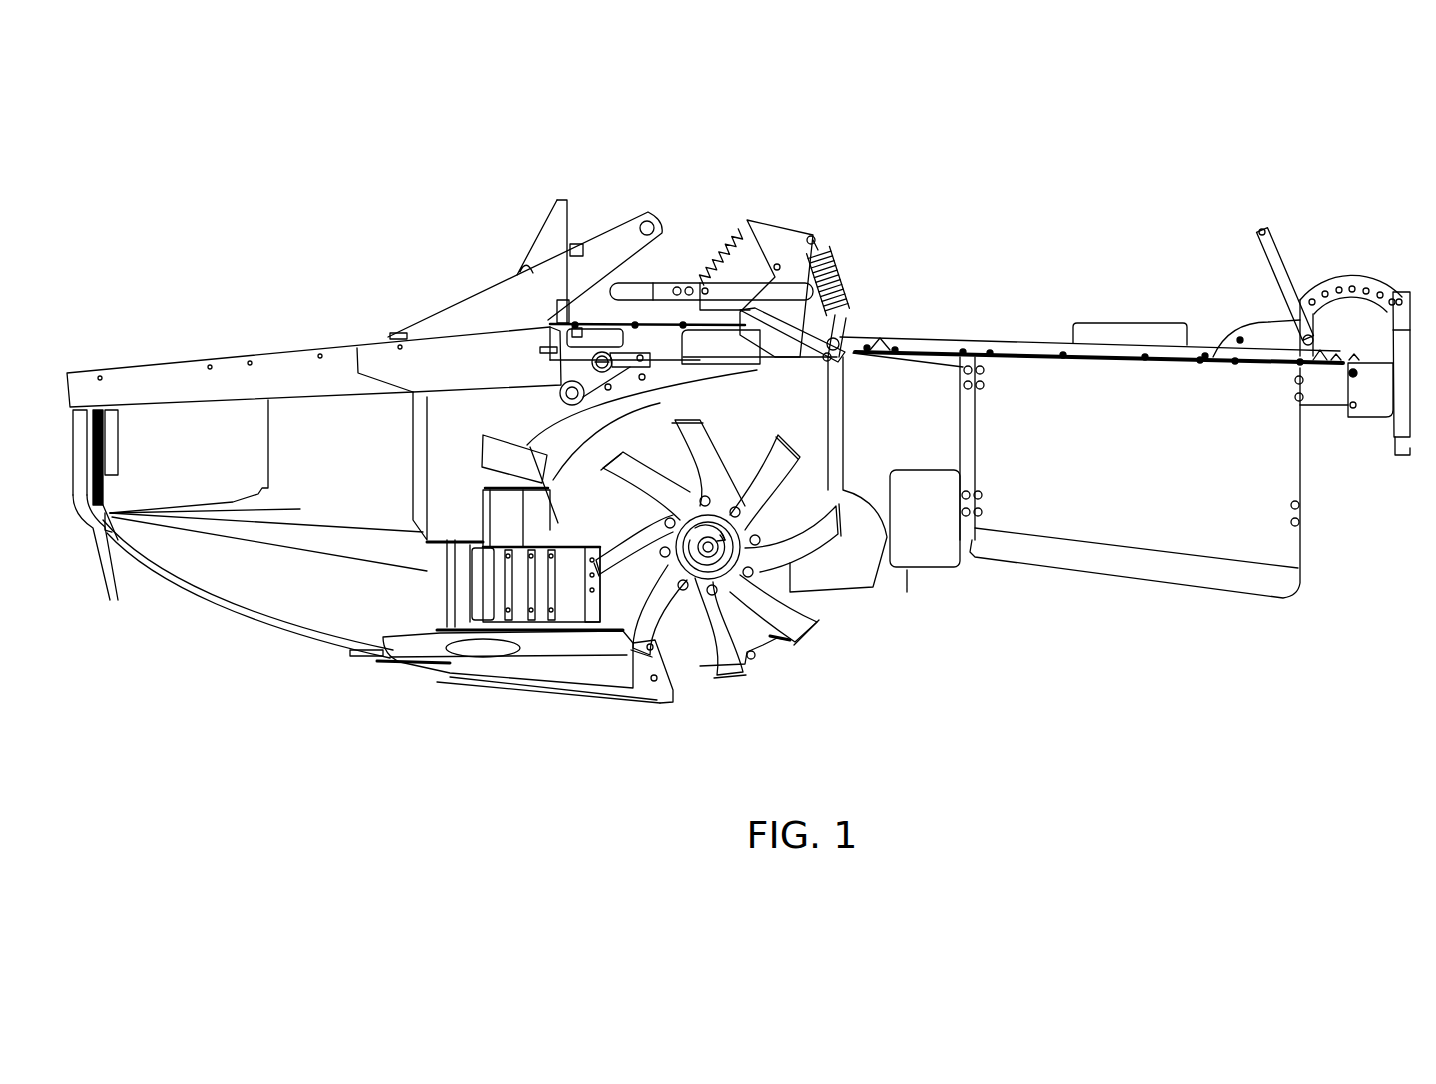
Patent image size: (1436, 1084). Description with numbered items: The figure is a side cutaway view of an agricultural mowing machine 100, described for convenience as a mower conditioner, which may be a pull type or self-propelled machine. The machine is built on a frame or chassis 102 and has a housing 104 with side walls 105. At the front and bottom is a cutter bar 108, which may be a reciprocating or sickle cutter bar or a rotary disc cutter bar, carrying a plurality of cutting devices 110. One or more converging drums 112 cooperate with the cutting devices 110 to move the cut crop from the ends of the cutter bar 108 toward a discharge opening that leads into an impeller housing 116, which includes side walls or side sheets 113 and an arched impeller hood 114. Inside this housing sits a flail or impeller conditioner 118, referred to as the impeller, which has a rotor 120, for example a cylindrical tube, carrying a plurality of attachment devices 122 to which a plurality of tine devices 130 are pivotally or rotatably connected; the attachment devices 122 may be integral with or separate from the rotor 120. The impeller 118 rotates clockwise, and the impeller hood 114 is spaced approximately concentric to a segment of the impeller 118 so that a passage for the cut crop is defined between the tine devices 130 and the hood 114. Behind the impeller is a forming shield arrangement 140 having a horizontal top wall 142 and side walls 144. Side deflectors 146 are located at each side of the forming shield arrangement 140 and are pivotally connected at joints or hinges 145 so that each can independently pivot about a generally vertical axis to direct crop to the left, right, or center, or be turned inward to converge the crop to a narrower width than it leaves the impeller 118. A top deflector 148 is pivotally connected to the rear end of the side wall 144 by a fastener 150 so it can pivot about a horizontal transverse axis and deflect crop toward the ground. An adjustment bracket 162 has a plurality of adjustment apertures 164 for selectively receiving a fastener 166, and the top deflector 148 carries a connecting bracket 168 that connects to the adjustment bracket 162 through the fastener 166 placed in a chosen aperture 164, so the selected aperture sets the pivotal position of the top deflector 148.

The agricultural mowing machine 100 is at (372, 207).
The frame or chassis 102 is at (485, 375).
The housing 104 is at (195, 600).
The side walls 105 is at (335, 598).
The cutter bar 108 is at (415, 680).
The cutting devices 110 is at (432, 632).
The converging drums 112 is at (560, 570).
The side walls or side sheets 113 is at (738, 419).
The arched impeller hood 114 is at (620, 406).
The impeller housing 116 is at (807, 415).
The impeller conditioner 118 is at (675, 632).
The rotor 120 is at (743, 527).
The attachment devices 122 is at (703, 500).
The tine devices 130 is at (795, 560).
The forming shield arrangement 140 is at (1030, 325).
The horizontal top wall 142 is at (947, 333).
The side walls 144 is at (1297, 387).
The joints or hinges 145 is at (985, 383).
The side deflectors 146 is at (1143, 445).
The top deflector 148 is at (1390, 420).
The fastener 150 is at (1348, 374).
The adjustment bracket 162 is at (1258, 323).
The adjustment apertures 164 is at (1370, 290).
The fastener 166 is at (1398, 298).
The connecting bracket 168 is at (1407, 390).